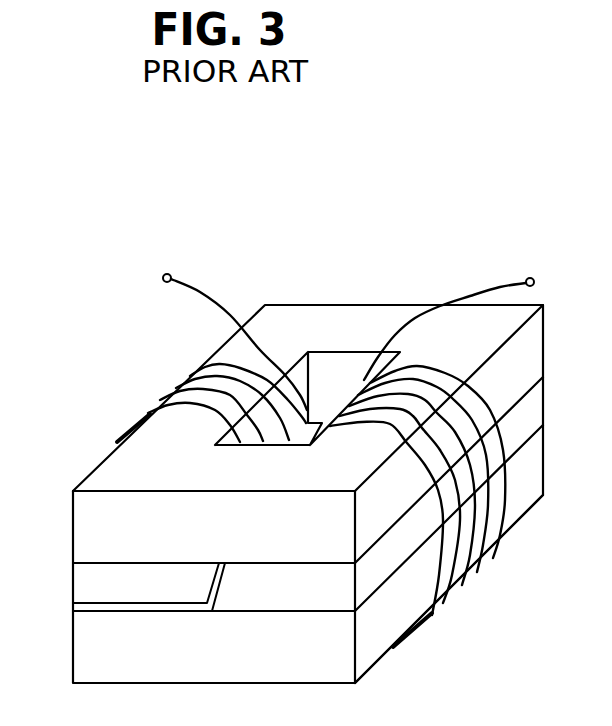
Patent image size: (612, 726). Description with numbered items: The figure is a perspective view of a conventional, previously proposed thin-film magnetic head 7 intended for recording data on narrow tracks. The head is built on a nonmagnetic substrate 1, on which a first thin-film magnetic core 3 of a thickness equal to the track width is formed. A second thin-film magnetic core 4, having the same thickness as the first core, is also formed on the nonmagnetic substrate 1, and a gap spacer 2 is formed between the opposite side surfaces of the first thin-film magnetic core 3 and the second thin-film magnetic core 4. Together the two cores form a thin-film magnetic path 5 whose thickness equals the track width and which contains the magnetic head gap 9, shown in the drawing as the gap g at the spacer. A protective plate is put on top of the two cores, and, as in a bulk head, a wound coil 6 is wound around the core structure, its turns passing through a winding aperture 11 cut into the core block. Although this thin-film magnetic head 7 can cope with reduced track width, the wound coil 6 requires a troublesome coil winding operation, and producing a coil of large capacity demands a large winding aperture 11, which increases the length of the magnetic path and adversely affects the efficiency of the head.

The thin-film magnetic head 7 is at (57, 286).
The nonmagnetic substrate 1 is at (93, 648).
The gap spacer 2 is at (217, 593).
The first thin-film magnetic core 3 is at (108, 577).
The second thin-film magnetic core 4 is at (340, 595).
The thin-film magnetic path 5 is at (282, 594).
The wound coil 6 is at (227, 368).
The magnetic head gap 9 is at (213, 570).
The winding aperture 11 is at (337, 358).